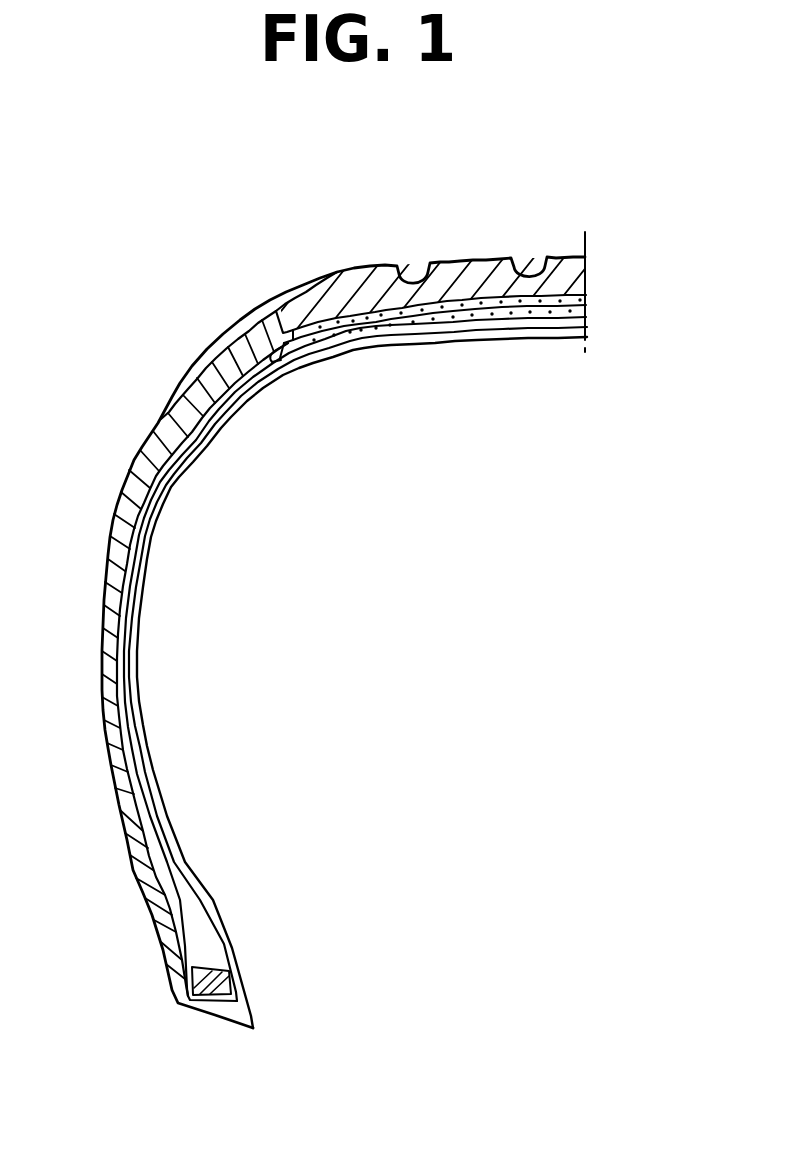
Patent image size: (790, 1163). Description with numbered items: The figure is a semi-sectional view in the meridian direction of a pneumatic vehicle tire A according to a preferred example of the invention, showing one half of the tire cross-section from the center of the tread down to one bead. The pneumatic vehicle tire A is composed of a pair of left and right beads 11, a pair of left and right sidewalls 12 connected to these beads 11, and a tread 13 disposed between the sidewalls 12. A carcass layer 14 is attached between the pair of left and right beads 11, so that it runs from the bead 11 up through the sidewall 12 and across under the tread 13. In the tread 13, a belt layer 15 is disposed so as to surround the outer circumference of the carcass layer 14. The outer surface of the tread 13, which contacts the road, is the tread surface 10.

The pneumatic vehicle tire A is at (620, 215).
The tread surface 10 is at (482, 257).
The bead 11 is at (241, 934).
The sidewall 12 is at (108, 762).
The tread 13 is at (575, 278).
The carcass layer 14 is at (135, 553).
The belt layer 15 is at (494, 300).